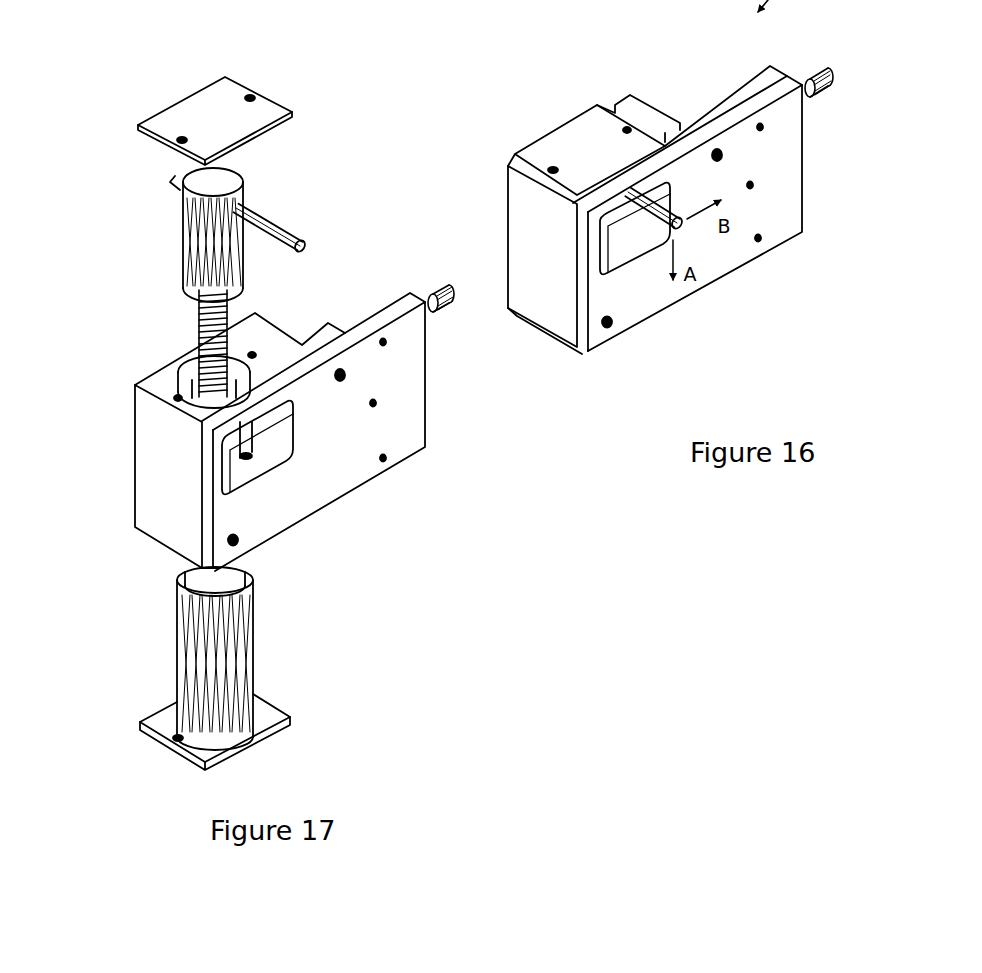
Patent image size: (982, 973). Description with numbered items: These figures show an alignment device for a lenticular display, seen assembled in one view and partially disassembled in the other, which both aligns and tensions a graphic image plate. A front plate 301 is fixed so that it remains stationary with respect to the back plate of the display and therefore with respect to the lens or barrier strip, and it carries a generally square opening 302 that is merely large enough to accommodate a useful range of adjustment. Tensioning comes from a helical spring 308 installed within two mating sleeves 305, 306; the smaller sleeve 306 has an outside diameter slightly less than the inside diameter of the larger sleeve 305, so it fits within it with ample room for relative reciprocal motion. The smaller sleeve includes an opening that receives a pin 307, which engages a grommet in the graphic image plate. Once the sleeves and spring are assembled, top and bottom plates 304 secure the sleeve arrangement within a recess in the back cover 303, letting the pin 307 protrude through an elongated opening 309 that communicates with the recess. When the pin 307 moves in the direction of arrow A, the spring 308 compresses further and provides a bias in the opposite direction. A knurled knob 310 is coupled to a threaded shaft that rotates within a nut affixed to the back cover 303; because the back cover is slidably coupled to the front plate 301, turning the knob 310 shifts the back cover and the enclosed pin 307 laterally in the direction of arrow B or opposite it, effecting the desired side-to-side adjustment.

In FIG. 16, the front plate 301 is at (775, 222).
In FIG. 16, the opening 302 is at (633, 267).
In FIG. 17, the back cover 303 is at (157, 478).
In FIG. 16, the back cover 303 is at (537, 235).
In FIG. 17, the top and bottom plates 304 is at (198, 110).
In FIG. 17, the sleeve 305 is at (175, 643).
In FIG. 17, the sleeve 306 is at (187, 217).
In FIG. 17, the pin 307 is at (301, 232).
In FIG. 16, the pin 307 is at (673, 218).
In FIG. 17, the helical spring 308 is at (198, 335).
In FIG. 17, the elongated opening 309 is at (253, 442).
In FIG. 17, the knurled knob 310 is at (445, 318).